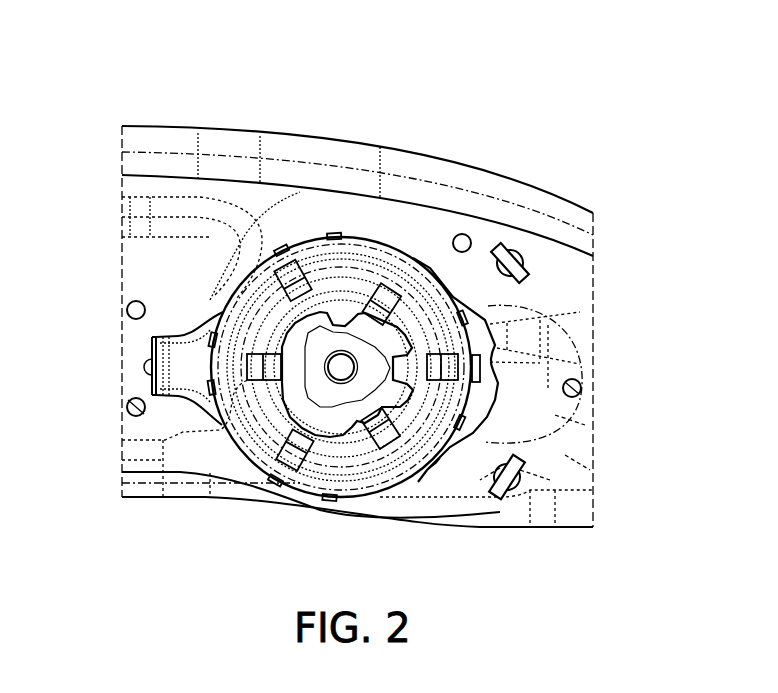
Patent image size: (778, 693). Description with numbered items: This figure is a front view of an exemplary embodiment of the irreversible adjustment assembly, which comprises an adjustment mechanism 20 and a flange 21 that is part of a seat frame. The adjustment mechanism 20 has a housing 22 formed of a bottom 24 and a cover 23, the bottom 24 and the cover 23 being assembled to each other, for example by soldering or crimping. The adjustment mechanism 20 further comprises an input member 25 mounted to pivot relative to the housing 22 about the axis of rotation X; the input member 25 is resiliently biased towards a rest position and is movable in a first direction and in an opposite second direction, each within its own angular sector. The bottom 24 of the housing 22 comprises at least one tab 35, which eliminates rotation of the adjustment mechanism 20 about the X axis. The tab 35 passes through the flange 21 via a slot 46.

The adjustment mechanism 20 is at (438, 325).
The flange 21 is at (557, 303).
The housing 22 is at (447, 475).
The cover 23 is at (325, 478).
The bottom 24 is at (478, 397).
The input member 25 is at (295, 400).
The tab 35 is at (148, 356).
The slot 46 is at (505, 248).